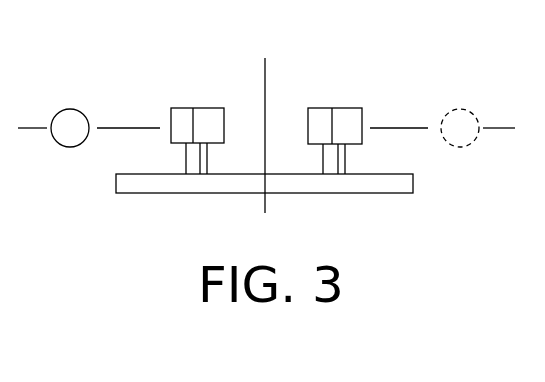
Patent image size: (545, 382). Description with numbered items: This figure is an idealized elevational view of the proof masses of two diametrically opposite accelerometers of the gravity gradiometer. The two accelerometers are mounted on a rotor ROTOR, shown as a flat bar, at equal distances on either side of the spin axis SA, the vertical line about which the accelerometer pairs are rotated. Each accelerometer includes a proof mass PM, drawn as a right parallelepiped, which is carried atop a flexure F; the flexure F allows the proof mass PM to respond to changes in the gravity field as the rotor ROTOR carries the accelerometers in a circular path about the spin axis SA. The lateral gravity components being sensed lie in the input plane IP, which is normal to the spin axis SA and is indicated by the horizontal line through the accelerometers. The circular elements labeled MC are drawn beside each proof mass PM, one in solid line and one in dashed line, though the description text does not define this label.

The magnetic coil MC is at (57, 112).
The proof mass PM is at (182, 104).
The flexure F is at (186, 162).
The spin axis SA is at (268, 203).
The rotor ROTOR is at (356, 195).
The input plane IP is at (487, 127).